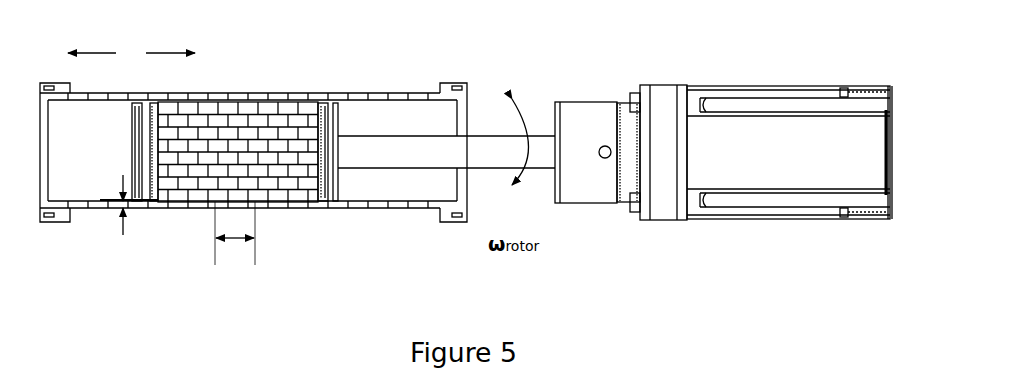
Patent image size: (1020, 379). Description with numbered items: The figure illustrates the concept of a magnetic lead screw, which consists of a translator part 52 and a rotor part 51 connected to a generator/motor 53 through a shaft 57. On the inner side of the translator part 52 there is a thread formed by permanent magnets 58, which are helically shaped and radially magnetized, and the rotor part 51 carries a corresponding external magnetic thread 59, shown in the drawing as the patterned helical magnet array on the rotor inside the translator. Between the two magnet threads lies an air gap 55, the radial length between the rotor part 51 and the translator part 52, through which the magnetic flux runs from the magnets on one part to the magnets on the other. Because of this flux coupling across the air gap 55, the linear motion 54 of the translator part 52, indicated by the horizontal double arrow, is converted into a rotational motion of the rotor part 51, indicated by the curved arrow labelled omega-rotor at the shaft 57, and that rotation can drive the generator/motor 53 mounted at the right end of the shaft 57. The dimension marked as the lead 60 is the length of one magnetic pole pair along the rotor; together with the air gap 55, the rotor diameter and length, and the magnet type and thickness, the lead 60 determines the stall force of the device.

The rotor part 51 is at (320, 142).
The translator part 52 is at (233, 93).
The generator/motor 53 is at (732, 85).
The linear motion 54 is at (131, 54).
The air gap 55 is at (125, 220).
The shaft 57 is at (516, 161).
The permanent magnets 58 is at (405, 100).
The external magnetic thread 59 is at (290, 117).
The lead 60 is at (255, 238).